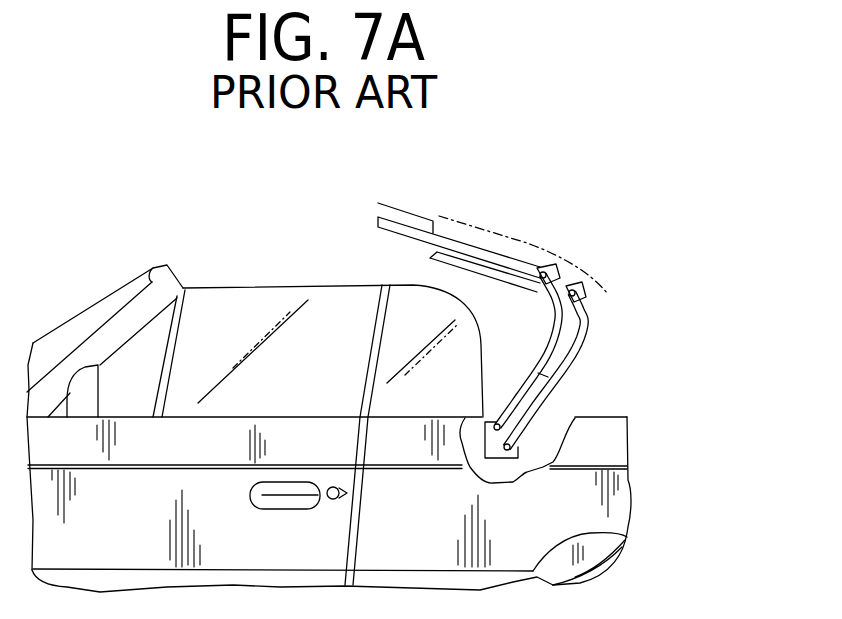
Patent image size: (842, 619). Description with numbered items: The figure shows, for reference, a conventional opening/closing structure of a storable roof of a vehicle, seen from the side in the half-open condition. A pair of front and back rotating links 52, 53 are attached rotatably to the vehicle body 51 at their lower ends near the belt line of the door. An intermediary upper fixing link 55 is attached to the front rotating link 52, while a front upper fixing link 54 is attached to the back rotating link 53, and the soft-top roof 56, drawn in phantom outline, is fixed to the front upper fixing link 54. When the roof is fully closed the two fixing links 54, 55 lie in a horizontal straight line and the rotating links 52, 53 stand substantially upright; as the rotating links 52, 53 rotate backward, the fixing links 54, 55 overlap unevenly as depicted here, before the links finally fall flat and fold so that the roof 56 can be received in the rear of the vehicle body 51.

The vehicle body 51 is at (598, 415).
The front rotating link 52 is at (540, 374).
The back rotating link 53 is at (590, 335).
The front upper fixing link 54 is at (442, 240).
The intermediary upper fixing link 55 is at (482, 276).
The soft-top roof 56 is at (527, 243).